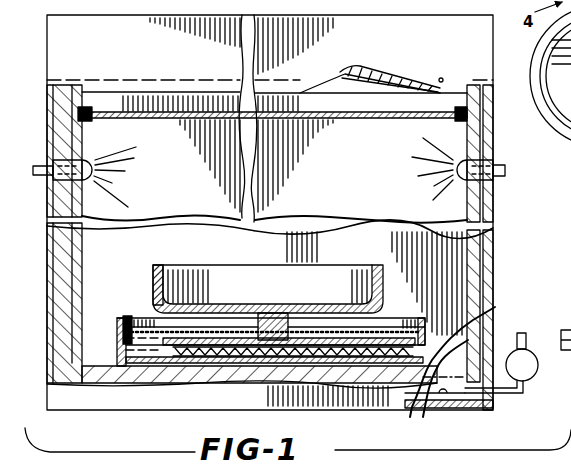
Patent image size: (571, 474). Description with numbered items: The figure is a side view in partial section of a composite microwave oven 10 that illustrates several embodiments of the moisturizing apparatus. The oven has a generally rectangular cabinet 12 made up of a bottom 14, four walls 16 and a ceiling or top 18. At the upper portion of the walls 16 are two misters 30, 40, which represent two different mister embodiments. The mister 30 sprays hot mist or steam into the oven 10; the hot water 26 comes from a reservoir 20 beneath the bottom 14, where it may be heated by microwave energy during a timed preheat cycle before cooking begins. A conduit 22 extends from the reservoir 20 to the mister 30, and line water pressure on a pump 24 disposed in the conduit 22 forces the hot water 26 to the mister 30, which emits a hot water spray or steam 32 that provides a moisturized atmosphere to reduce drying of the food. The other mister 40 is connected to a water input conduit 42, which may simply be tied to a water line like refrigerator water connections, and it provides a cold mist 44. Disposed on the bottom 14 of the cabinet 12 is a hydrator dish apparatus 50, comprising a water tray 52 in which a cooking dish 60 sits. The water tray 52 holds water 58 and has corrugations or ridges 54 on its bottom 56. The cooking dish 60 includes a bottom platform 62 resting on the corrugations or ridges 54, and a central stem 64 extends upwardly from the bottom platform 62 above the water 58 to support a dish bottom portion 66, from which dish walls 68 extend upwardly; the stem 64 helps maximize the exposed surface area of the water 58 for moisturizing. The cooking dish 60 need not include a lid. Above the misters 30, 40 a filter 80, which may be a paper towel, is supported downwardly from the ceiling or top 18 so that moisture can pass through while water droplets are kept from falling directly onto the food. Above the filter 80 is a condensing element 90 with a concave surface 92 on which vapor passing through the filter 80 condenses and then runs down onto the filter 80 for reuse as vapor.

The composite microwave oven 10 is at (293, 212).
The cabinet 12 is at (497, 296).
The bottom 14 is at (101, 364).
The walls 16 is at (466, 258).
The ceiling or top 18 is at (441, 80).
The reservoir 20 is at (443, 403).
The conduit 22 is at (511, 394).
The pump 24 is at (541, 373).
The water 26 is at (393, 400).
The mister 30 is at (492, 155).
The hot water spray or steam 32 is at (425, 176).
The mister 40 is at (97, 155).
The water conduit 42 is at (41, 164).
The cold mist 44 is at (132, 168).
The hydrator dish apparatus 50 is at (245, 276).
The water tray 52 is at (121, 315).
The corrugations or ridges 54 is at (264, 340).
The bottom 56 is at (178, 354).
The water 58 is at (138, 326).
The cooking dish 60 is at (156, 262).
The bottom platform 62 is at (405, 320).
The stem 64 is at (249, 320).
The dish bottom portion 66 is at (342, 308).
The dish walls 68 is at (165, 292).
The filter 80 is at (319, 115).
The condensing element 90 is at (386, 72).
The concave surface 92 is at (373, 89).